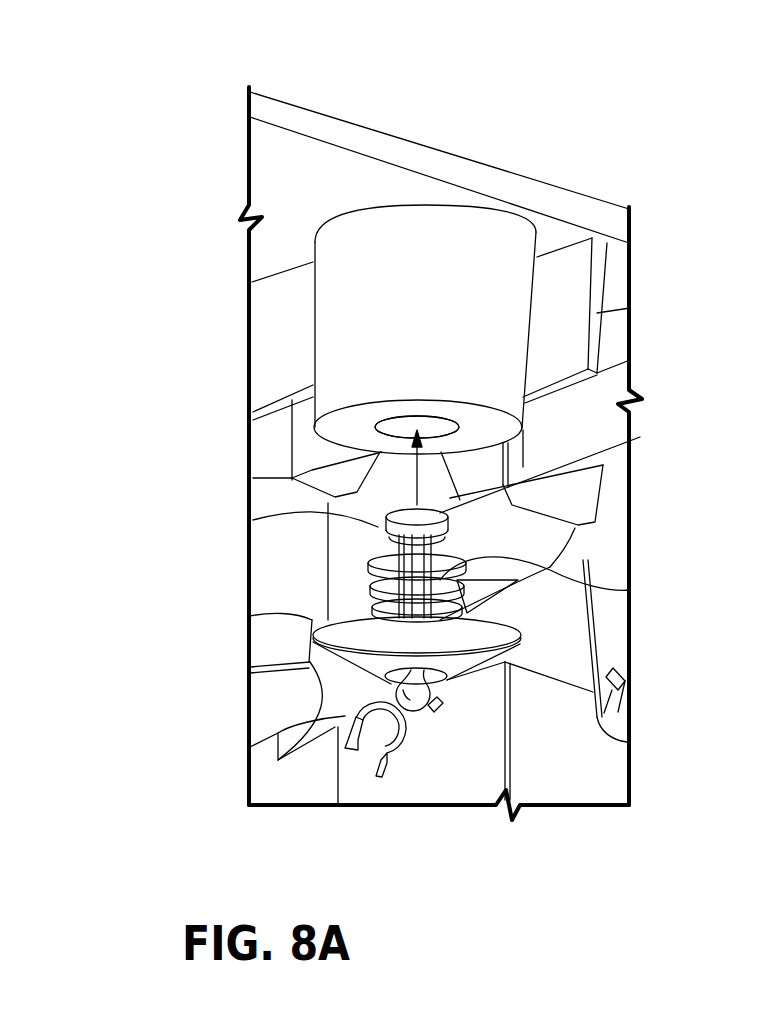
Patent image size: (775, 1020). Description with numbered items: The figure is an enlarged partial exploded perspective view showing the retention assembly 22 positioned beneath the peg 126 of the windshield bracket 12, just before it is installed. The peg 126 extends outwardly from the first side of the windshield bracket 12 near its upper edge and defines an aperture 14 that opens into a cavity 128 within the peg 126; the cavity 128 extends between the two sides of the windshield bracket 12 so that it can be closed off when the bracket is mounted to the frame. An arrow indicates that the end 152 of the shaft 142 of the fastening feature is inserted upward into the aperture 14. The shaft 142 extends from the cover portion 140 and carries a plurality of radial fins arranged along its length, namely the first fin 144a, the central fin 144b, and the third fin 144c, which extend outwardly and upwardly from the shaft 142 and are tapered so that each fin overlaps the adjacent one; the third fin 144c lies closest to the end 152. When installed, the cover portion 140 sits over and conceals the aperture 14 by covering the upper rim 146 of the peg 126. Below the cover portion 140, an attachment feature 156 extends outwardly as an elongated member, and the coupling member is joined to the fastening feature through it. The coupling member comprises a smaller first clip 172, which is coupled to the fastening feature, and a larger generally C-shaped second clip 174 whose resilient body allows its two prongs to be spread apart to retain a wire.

The windshield bracket 12 is at (283, 158).
The aperture 14 is at (391, 416).
The retention assembly 22 is at (563, 416).
The peg 126 is at (382, 243).
The cavity 128 is at (438, 430).
The cover portion 140 is at (493, 650).
The shaft 142 is at (555, 572).
The first fin 144a is at (378, 610).
The central fin 144b is at (378, 585).
The third fin 144c is at (378, 558).
The upper rim 146 is at (484, 424).
The end of the shaft 152 is at (444, 505).
The attachment feature 156 is at (393, 691).
The first clip 172 is at (430, 700).
The second clip 174 is at (352, 717).